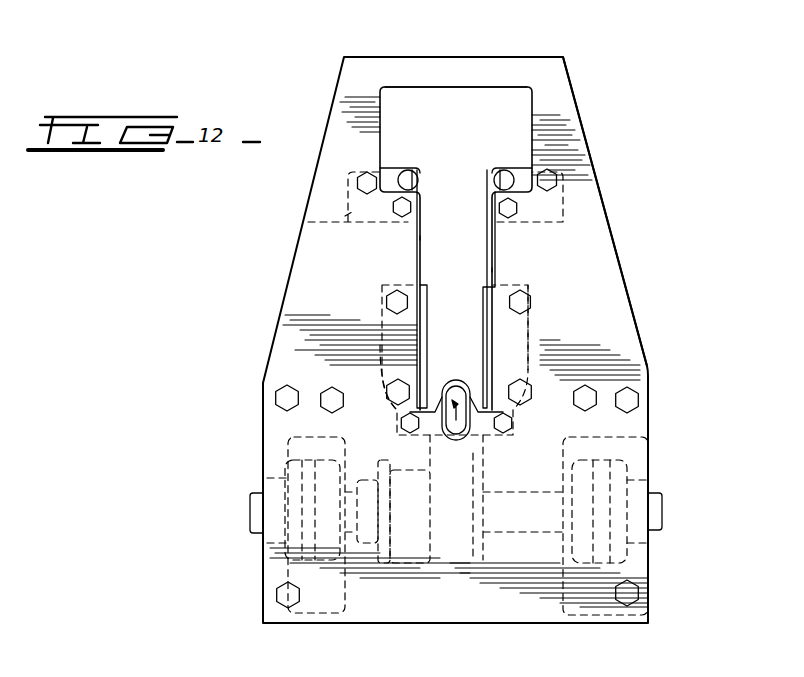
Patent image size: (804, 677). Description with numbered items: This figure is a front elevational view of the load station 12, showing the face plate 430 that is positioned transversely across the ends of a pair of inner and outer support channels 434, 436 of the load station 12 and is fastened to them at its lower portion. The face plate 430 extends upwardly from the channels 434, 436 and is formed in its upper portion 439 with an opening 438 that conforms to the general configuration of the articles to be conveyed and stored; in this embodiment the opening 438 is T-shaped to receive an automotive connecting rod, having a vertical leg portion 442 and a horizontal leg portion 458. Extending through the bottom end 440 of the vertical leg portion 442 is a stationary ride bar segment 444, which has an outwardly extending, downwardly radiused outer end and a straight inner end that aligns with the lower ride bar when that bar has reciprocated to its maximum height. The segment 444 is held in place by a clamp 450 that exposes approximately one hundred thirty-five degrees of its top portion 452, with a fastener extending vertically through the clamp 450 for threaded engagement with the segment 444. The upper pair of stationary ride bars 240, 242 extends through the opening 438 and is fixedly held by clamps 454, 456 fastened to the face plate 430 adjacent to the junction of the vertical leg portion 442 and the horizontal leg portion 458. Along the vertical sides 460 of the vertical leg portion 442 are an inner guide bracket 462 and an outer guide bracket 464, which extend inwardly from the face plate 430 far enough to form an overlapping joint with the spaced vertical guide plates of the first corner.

The load station 12 is at (583, 105).
The face plate 430 is at (598, 230).
The upper portion 439 is at (575, 120).
The opening 438 is at (477, 129).
The horizontal leg portion 458 is at (508, 113).
The stationary ride bar 240 is at (404, 172).
The stationary ride bar 242 is at (514, 176).
The clamp 454 is at (308, 222).
The clamp 456 is at (548, 218).
The vertical sides 460 is at (418, 242).
The vertical leg portion 442 is at (447, 262).
The stationary ride bar segment 444 is at (462, 382).
The top portion 452 is at (446, 382).
The bottom end 440 is at (513, 421).
The inner guide bracket 462 is at (413, 315).
The outer guide bracket 464 is at (498, 325).
The clamp 450 is at (378, 405).
The inner support channel 434 is at (262, 438).
The outer support channel 436 is at (648, 440).